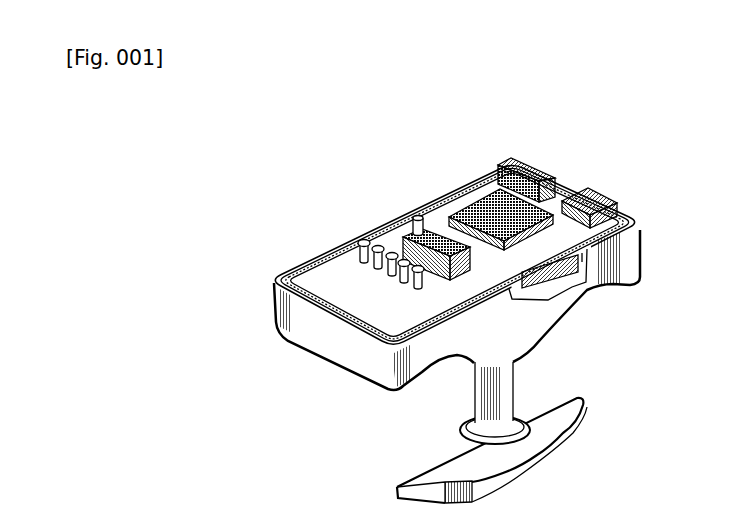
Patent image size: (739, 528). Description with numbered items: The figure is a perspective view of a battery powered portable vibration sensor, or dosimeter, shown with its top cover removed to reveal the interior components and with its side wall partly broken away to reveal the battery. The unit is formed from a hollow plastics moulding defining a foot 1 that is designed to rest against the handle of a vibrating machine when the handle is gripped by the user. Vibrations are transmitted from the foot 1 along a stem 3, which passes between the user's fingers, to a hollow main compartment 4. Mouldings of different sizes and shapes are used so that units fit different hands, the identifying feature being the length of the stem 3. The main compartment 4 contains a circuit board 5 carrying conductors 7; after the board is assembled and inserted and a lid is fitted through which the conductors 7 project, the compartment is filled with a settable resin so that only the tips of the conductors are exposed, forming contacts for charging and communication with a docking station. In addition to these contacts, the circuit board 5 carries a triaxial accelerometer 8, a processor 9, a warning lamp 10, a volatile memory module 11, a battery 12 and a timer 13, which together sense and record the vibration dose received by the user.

The foot 1 is at (557, 452).
The stem 3 is at (510, 382).
The main compartment 4 is at (642, 236).
The circuit board 5 is at (352, 323).
The conductors 7 is at (364, 240).
The triaxial accelerometer 8 is at (440, 234).
The processor 9 is at (494, 200).
The warning lamp 10 is at (417, 214).
The volatile memory module 11 is at (594, 198).
The battery 12 is at (574, 272).
The timer 13 is at (532, 162).